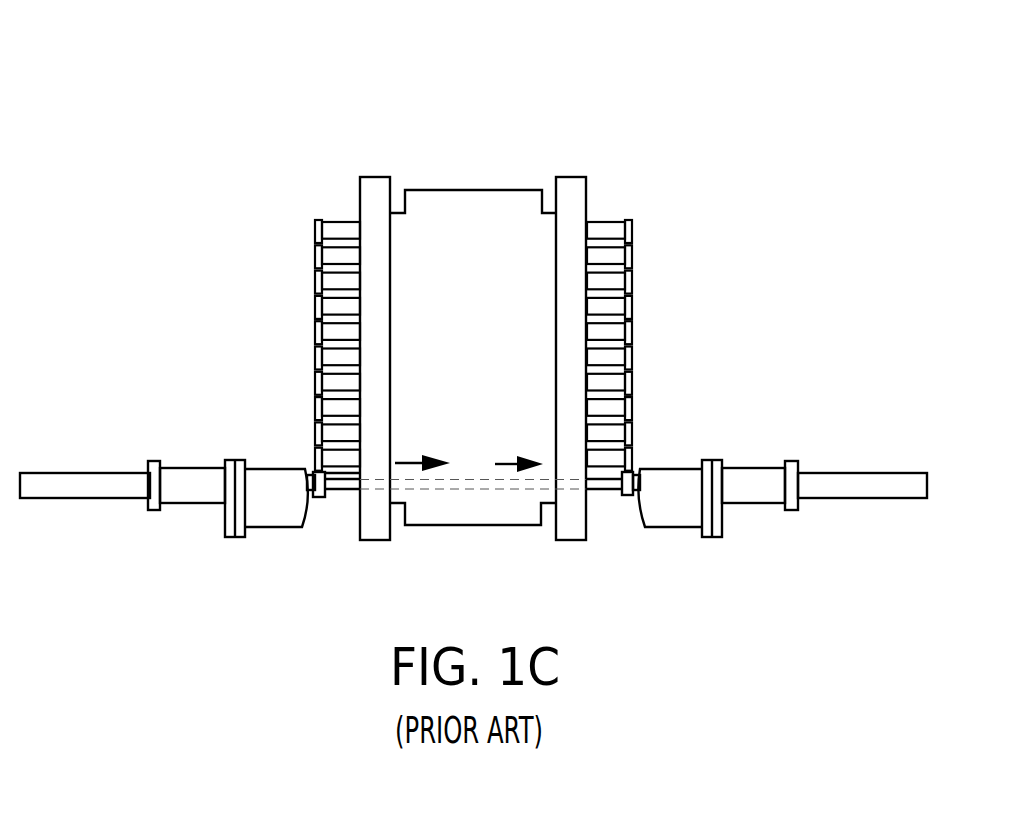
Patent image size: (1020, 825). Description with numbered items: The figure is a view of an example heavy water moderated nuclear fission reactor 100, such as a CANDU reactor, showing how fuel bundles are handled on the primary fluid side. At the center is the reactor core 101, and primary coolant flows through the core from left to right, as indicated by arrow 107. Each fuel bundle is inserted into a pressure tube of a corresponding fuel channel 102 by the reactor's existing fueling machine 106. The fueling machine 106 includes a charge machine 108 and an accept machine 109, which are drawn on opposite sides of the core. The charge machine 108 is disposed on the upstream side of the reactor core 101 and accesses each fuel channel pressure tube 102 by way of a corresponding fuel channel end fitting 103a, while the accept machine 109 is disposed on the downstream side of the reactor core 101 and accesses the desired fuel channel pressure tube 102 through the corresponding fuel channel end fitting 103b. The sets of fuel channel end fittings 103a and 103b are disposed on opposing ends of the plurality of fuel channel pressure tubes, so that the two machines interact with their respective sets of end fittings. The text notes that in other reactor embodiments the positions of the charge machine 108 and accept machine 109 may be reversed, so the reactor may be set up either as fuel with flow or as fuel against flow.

The reactor 100 is at (436, 128).
The reactor core 101 is at (500, 332).
The fuel channel 102 is at (463, 485).
The fuel channel end fitting 103a is at (308, 192).
The fuel channel end fitting 103b is at (620, 190).
The fueling machine 106 is at (194, 413).
The arrow 107 is at (412, 463).
The charge machine 108 is at (200, 542).
The accept machine 109 is at (754, 435).